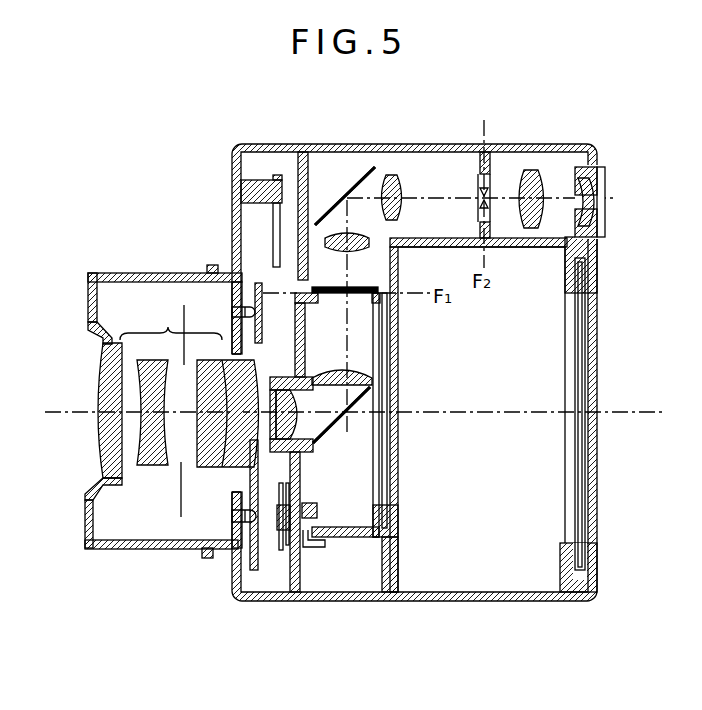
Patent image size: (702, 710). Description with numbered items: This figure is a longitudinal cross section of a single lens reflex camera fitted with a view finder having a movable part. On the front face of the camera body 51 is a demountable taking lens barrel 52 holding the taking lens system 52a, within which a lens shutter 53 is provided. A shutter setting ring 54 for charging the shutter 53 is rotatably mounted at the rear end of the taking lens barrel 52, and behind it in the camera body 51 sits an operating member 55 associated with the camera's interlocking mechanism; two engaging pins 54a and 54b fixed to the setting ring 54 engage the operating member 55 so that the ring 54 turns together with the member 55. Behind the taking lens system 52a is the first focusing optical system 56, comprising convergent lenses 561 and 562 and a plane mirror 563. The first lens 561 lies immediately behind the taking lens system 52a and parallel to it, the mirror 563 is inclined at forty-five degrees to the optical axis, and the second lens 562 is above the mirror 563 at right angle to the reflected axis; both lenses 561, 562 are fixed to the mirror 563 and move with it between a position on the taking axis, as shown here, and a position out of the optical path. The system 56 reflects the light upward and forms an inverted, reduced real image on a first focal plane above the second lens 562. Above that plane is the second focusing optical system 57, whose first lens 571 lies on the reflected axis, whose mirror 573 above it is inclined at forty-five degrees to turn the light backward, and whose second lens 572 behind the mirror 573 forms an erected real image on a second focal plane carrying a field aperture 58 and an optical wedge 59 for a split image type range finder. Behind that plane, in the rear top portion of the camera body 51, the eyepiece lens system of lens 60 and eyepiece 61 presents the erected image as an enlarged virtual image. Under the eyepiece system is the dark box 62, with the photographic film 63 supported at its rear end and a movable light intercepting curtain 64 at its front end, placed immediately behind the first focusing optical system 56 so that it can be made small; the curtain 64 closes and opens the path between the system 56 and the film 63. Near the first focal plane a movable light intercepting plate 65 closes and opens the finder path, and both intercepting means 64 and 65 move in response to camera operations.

The camera body 51 is at (397, 141).
The taking lens barrel 52 is at (142, 268).
The taking lens system 52a is at (160, 391).
The lens shutter 53 is at (180, 500).
The shutter setting ring 54 is at (240, 300).
The engaging pin 54a is at (241, 309).
The engaging pin 54b is at (246, 513).
The operating member 55 is at (259, 288).
The first focusing optical system 56 is at (366, 405).
The first lens 561 is at (293, 378).
The second lens 562 is at (368, 372).
The plane mirror 563 is at (333, 431).
The second focusing optical system 57 is at (336, 195).
The first lens 571 is at (347, 254).
The second lens 572 is at (401, 182).
The mirror 573 is at (363, 172).
The field aperture 58 is at (489, 168).
The optical wedge 59 is at (480, 168).
The lens 60 is at (540, 181).
The eyepiece 61 is at (595, 190).
The dark box 62 is at (520, 470).
The photographic film 63 is at (583, 328).
The light intercepting curtain 64 is at (388, 462).
The light intercepting plate 65 is at (388, 294).